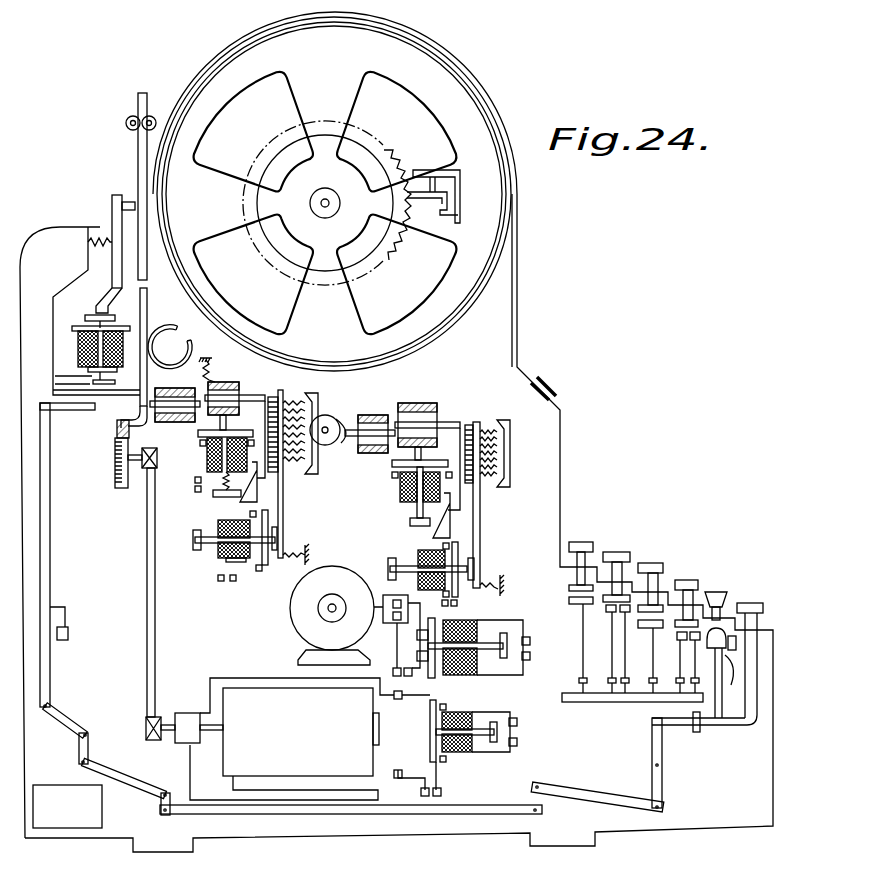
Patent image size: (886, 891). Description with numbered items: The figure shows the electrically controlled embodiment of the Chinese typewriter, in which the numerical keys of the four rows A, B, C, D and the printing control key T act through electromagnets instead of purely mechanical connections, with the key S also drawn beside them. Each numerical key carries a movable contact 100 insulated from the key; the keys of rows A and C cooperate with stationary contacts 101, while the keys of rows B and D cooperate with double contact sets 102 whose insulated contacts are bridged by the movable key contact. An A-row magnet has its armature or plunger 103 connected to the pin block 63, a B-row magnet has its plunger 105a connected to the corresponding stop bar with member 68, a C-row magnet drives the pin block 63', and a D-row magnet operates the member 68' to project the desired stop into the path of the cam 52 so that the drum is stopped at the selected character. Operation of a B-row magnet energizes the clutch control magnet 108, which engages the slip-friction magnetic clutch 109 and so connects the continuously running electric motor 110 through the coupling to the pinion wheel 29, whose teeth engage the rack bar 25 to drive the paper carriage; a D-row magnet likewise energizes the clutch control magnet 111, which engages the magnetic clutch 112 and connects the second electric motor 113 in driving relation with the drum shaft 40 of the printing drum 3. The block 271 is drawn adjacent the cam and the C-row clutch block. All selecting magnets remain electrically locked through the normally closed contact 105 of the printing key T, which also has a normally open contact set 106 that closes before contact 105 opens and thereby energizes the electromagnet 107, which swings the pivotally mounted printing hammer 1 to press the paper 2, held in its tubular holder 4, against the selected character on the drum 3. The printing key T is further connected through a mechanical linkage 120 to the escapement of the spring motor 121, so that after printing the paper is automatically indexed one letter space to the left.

The printing hammer 1 is at (131, 201).
The paper 2 is at (138, 94).
The printing drum 3 is at (428, 72).
The tubular holder 4 is at (175, 328).
The rack bar 25 is at (114, 424).
The pinion wheel 29 is at (113, 471).
The drum shaft 40 is at (328, 200).
The cam 52 is at (340, 426).
The pin block 63 is at (232, 418).
The pin block 63' is at (427, 443).
The stop-controlling member 68 is at (285, 474).
The stop-controlling member 68' is at (489, 505).
The movable contact 100 is at (569, 588).
The stationary contact 101 is at (569, 601).
The double contact set 102 is at (623, 613).
The armature or plunger 103 is at (228, 426).
The normally closed contact 105 is at (727, 639).
The plunger 105a is at (243, 562).
The normally open contact set 106 is at (728, 684).
The electromagnet 107 is at (76, 350).
The clutch control magnet 108 is at (462, 712).
The magnetic clutch 109 is at (200, 712).
The electric motor 110 is at (262, 688).
The clutch control magnet 111 is at (470, 620).
The magnetic clutch 112 is at (385, 625).
The electric motor 113 is at (342, 578).
The mechanical linkage 120 is at (552, 787).
The spring motor 121 is at (48, 469).
The clutch block 271 is at (362, 416).
The key row A is at (206, 457).
The key row B is at (223, 519).
The key row C is at (398, 487).
The key row D is at (416, 550).
The printing control key T is at (716, 648).
The key S is at (750, 600).